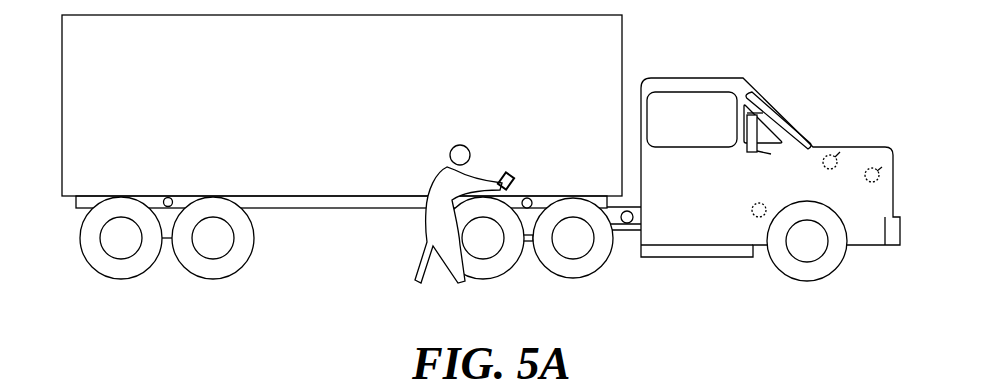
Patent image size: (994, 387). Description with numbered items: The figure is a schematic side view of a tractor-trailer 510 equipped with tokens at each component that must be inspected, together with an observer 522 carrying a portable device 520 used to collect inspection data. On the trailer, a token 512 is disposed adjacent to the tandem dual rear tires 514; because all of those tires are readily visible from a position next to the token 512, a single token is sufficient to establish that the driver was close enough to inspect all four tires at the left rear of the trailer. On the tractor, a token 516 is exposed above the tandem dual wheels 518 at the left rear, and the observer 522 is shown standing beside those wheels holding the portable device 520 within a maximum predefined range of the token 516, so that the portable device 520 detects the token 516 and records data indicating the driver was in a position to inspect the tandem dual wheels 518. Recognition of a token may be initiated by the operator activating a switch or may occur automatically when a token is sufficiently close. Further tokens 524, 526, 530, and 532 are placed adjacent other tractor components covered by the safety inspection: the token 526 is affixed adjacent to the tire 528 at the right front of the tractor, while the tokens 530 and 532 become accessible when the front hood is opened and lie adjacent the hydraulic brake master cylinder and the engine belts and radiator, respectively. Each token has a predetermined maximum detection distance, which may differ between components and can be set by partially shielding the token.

The tractor-trailer 510 is at (838, 302).
The token 512 is at (172, 199).
The tandem dual rear tires 514 is at (80, 246).
The token 516 is at (530, 200).
The tandem dual wheels 518 is at (500, 274).
The portable device 520 is at (500, 173).
The observer 522 is at (430, 242).
The token 524 is at (627, 224).
The token 526 is at (756, 217).
The tire 528 is at (788, 267).
The token 530 is at (843, 147).
The token 532 is at (886, 175).